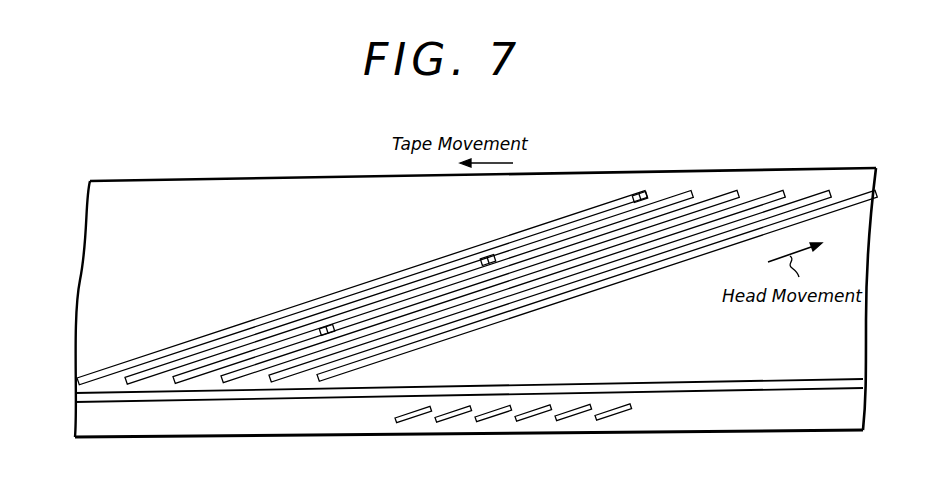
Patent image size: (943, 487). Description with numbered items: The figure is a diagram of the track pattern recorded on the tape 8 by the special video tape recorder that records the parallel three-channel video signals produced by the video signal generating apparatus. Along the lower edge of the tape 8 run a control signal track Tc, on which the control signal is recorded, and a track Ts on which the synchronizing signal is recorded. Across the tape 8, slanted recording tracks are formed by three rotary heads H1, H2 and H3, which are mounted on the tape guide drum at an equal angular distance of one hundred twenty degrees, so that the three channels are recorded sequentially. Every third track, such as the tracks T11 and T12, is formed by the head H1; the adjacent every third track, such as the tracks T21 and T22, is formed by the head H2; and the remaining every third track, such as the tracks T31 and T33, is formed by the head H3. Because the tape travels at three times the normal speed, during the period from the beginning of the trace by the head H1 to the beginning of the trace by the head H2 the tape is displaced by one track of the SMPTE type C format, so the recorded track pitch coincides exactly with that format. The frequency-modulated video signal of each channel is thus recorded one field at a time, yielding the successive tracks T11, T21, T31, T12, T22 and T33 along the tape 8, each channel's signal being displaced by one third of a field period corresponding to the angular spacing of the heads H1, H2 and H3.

The tape 8 is at (250, 428).
The control signal track Tc is at (700, 387).
The synchronizing signal track Ts is at (603, 420).
The track T11 is at (566, 224).
The track T21 is at (669, 195).
The track T31 is at (712, 195).
The track T12 is at (757, 195).
The track T22 is at (800, 195).
The track T33 is at (842, 195).
The rotary head H1 is at (636, 190).
The rotary head H2 is at (487, 253).
The rotary head H3 is at (322, 322).